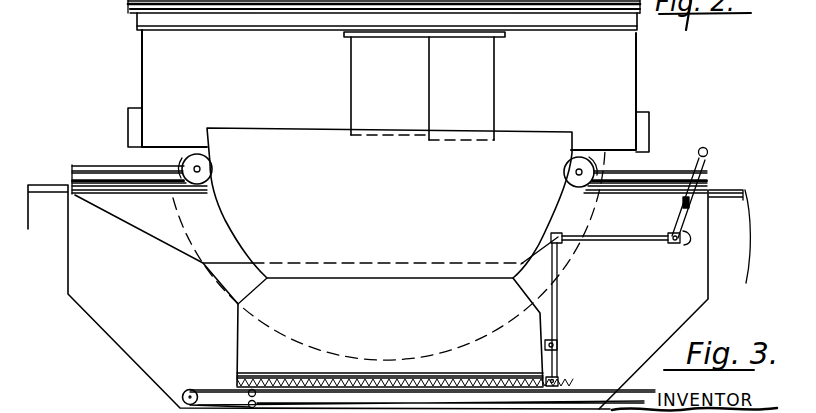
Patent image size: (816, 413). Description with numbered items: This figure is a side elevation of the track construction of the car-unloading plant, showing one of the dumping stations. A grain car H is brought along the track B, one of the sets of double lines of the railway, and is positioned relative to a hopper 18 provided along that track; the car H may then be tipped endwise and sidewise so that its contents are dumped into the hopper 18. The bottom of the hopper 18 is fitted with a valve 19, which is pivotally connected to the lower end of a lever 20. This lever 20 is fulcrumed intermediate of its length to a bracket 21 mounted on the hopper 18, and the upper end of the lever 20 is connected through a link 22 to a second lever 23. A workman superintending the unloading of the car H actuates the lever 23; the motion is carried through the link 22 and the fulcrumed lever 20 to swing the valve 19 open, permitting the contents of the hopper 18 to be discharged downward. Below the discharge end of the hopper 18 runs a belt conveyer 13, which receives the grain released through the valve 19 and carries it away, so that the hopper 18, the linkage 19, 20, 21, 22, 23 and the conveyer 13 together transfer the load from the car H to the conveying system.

The grain car H is at (616, 90).
The track B is at (718, 183).
The hopper 18 is at (569, 120).
The valve 19 is at (503, 358).
The lever 20 is at (553, 352).
The bracket 21 is at (549, 330).
The link 22 is at (677, 224).
The lever 23 is at (680, 243).
The belt conveyer 13 is at (572, 390).